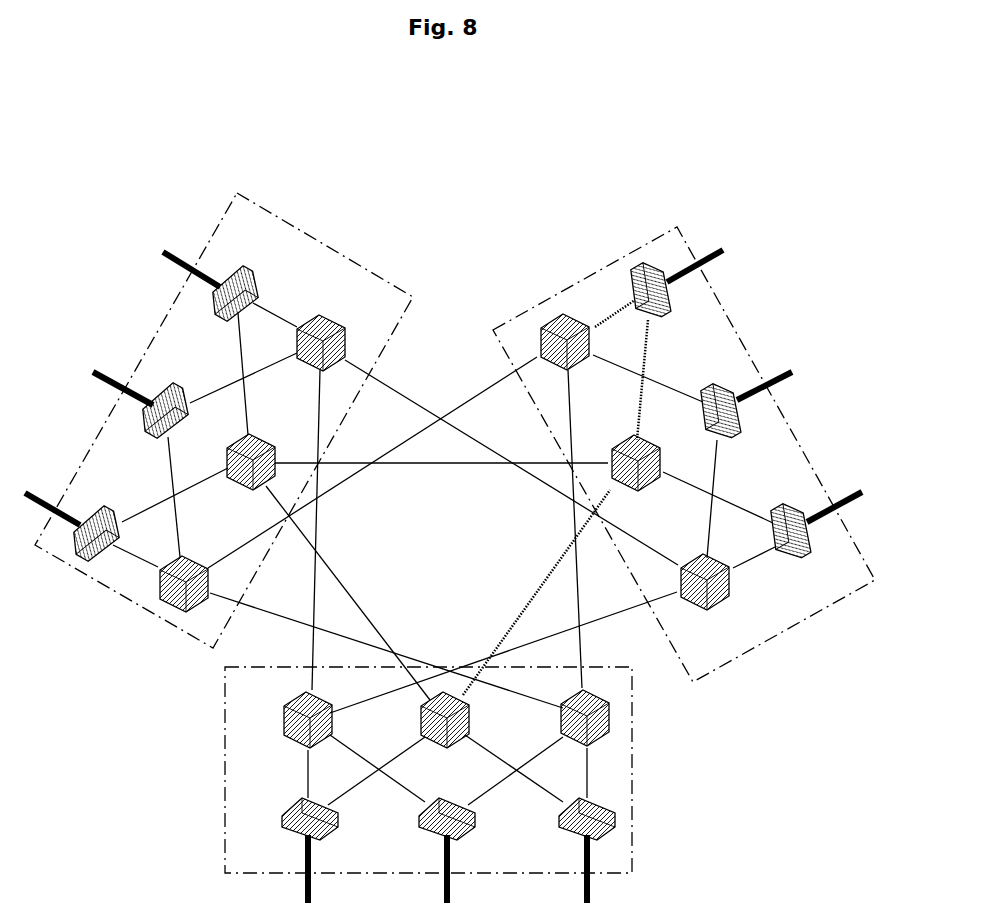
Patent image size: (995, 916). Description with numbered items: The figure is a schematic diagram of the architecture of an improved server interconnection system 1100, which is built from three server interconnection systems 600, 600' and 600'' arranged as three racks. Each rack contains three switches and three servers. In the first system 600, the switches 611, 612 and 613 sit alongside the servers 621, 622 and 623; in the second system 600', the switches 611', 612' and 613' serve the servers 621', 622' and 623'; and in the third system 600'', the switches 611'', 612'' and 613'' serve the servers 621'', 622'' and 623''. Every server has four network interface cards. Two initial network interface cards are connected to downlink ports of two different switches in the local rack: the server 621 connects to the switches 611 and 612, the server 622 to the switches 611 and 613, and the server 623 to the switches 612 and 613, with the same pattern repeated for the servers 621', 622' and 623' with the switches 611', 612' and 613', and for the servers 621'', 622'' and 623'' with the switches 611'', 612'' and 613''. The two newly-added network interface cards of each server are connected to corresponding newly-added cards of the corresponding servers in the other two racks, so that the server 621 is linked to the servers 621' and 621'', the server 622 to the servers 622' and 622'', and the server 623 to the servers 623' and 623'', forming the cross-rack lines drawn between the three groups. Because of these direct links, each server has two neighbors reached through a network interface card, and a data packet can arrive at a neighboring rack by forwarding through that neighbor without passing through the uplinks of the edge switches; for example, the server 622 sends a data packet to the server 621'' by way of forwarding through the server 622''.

The improved server interconnection system 1100 is at (174, 152).
The server interconnection system 600 is at (224, 420).
The server interconnection system 600' is at (684, 454).
The server interconnection system 600'' is at (474, 776).
The switch 611 is at (126, 518).
The switch 612 is at (195, 451).
The switch 613 is at (230, 331).
The server 621 is at (198, 565).
The server 622 is at (265, 449).
The server 623 is at (334, 329).
The switch 611' is at (668, 345).
The switch 612' is at (701, 456).
The switch 613' is at (771, 528).
The server 621' is at (578, 363).
The server 622' is at (643, 480).
The server 623' is at (713, 599).
The switch 611'' is at (540, 819).
The switch 612'' is at (446, 819).
The switch 613'' is at (331, 820).
The server 621'' is at (558, 718).
The server 622'' is at (422, 720).
The server 623'' is at (284, 720).